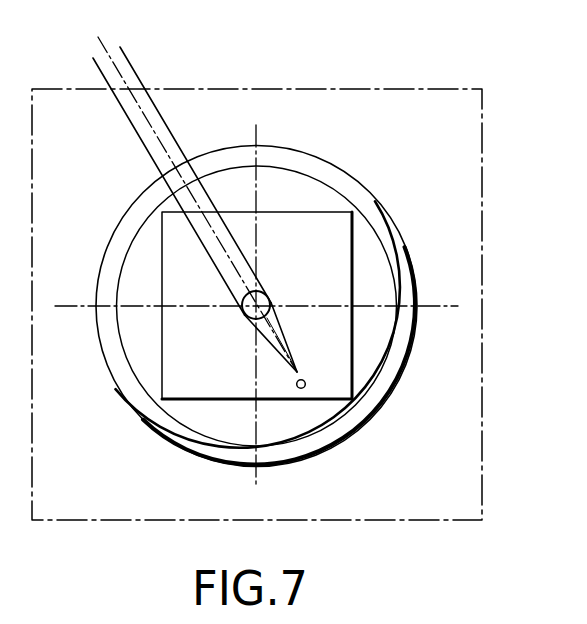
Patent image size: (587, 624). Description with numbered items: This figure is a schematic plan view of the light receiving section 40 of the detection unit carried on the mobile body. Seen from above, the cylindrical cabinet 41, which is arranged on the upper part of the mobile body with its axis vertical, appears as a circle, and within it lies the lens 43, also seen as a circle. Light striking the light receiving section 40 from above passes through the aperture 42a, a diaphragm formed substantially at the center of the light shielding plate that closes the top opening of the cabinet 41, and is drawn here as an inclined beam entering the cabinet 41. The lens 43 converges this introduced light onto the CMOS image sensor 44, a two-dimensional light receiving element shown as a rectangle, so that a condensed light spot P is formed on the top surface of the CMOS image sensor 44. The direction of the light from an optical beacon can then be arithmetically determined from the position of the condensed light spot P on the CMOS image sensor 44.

The light receiving section 40 is at (376, 88).
The cylindrical cabinet 41 is at (383, 200).
The lens 43 is at (310, 190).
The CMOS image sensor 44 is at (338, 277).
The aperture 42a is at (275, 322).
The condensed light spot P is at (301, 388).